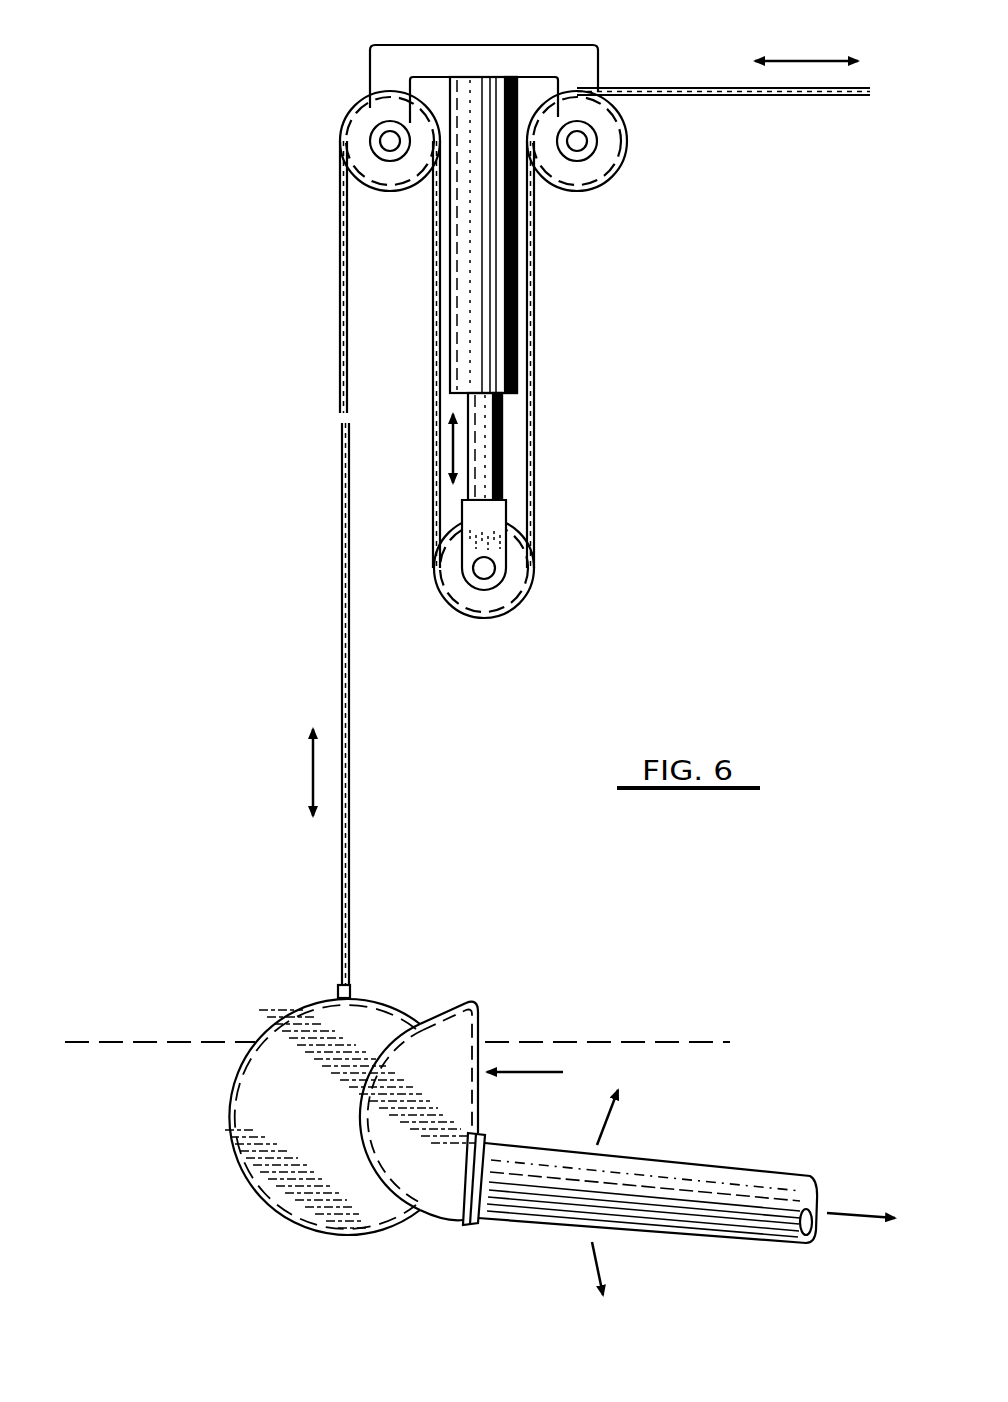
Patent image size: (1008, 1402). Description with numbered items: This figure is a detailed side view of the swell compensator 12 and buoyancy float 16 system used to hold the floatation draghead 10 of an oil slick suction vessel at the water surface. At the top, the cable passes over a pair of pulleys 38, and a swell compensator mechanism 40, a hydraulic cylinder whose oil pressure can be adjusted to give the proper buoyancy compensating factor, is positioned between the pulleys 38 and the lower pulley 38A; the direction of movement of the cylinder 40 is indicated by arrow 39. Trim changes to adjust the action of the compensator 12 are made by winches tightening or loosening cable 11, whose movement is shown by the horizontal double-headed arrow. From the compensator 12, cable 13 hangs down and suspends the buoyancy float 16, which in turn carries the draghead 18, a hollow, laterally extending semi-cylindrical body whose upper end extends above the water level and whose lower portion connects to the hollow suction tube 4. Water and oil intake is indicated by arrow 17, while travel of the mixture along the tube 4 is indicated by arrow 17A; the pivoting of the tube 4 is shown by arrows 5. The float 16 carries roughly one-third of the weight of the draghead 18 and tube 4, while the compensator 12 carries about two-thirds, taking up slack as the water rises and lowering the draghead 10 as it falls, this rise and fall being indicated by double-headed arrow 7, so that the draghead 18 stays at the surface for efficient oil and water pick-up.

The suction tube 4 is at (740, 1160).
The pivot direction arrows 5 is at (605, 1125).
The double headed arrow 7 is at (311, 762).
The floatation draghead 10 is at (451, 1113).
The cable 11 is at (818, 58).
The swell compensator 12 is at (256, 212).
The cable 13 is at (355, 788).
The buoyancy float 16 is at (283, 1012).
The water/oil intake arrow 17 is at (533, 1072).
The water/oil travel arrow 17A is at (852, 1210).
The draghead 18 is at (487, 1030).
The pulleys 38 is at (356, 120).
The pulley 38A is at (515, 578).
The arrow 39 is at (452, 445).
The swell compensator mechanism 40 is at (518, 290).